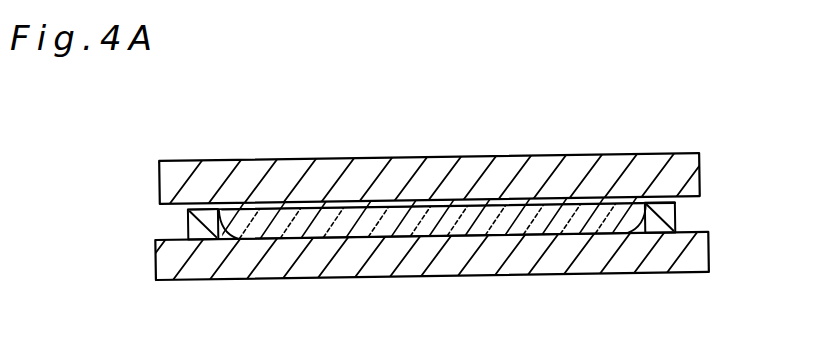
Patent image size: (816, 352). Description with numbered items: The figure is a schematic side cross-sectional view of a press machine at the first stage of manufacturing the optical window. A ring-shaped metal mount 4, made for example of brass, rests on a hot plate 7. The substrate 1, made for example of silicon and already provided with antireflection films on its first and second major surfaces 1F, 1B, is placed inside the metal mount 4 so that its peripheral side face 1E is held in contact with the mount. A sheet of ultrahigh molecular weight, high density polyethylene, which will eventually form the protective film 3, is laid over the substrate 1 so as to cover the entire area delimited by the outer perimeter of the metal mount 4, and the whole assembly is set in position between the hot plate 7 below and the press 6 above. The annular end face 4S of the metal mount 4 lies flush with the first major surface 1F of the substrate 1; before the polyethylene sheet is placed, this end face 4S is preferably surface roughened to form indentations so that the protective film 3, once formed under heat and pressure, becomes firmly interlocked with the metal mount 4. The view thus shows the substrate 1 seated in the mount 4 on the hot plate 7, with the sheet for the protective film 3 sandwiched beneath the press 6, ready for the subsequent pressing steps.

The substrate 1 is at (549, 222).
The first major surface 1F is at (462, 207).
The second major surface 1B is at (467, 274).
The peripheral side face 1E is at (234, 240).
The protective film 3 is at (405, 206).
The metal mount 4 is at (187, 225).
The annular end face 4S is at (661, 203).
The press 6 is at (208, 185).
The hot plate 7 is at (197, 262).